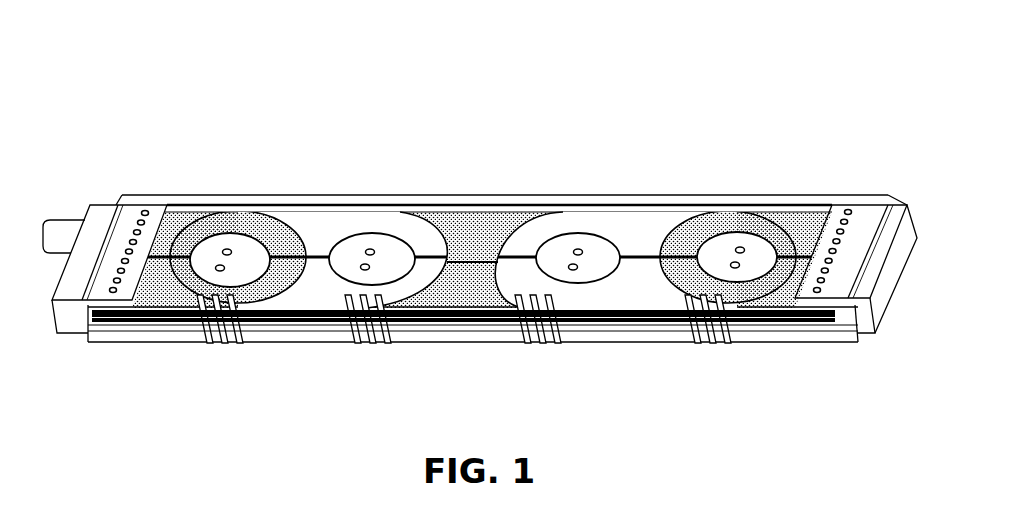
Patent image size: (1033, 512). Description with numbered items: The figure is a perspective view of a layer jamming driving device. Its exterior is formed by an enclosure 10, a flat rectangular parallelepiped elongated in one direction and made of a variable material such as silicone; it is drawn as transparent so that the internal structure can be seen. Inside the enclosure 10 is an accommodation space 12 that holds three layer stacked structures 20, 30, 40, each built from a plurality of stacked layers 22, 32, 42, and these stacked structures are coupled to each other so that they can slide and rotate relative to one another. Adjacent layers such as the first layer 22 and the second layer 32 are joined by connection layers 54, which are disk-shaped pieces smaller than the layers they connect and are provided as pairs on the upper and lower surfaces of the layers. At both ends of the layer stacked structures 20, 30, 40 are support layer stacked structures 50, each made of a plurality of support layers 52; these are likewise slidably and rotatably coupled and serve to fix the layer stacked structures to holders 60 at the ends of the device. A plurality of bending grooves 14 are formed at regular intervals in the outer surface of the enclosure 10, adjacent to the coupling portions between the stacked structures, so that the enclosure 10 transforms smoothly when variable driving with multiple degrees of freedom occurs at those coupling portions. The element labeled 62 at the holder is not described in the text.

The enclosure 10 is at (877, 197).
The accommodation space 12 is at (466, 283).
The bending groove 14 is at (222, 342).
The layer stacked structure 20 is at (345, 207).
The first layer 22 is at (400, 225).
The layer stacked structure 30 is at (467, 207).
The second layer 32 is at (503, 227).
The layer stacked structure 40 is at (610, 207).
The layer 42 is at (656, 227).
The support layer stacked structure 50 is at (217, 206).
The support layer 52 is at (257, 214).
The connection layer 54 is at (198, 265).
The holder 60 is at (102, 213).
The connector terminal plate 62 is at (137, 213).